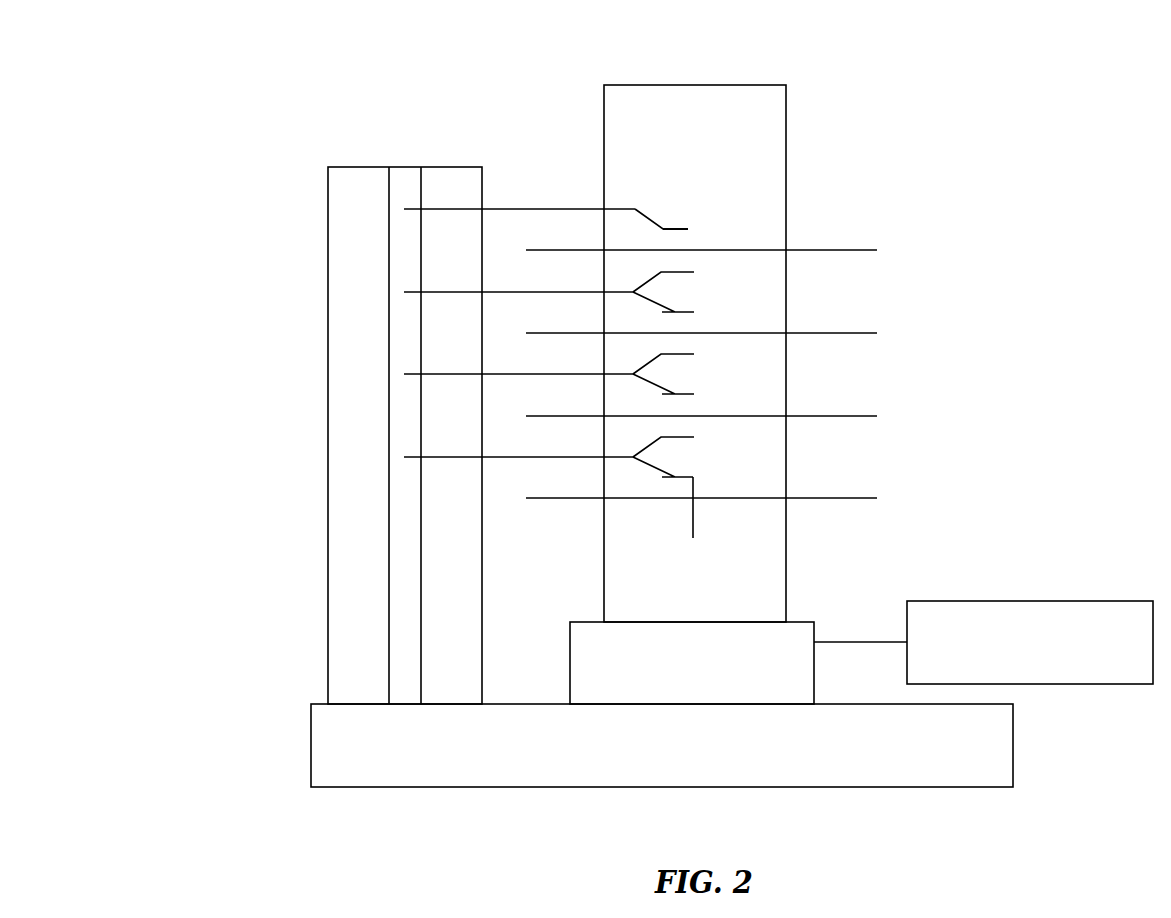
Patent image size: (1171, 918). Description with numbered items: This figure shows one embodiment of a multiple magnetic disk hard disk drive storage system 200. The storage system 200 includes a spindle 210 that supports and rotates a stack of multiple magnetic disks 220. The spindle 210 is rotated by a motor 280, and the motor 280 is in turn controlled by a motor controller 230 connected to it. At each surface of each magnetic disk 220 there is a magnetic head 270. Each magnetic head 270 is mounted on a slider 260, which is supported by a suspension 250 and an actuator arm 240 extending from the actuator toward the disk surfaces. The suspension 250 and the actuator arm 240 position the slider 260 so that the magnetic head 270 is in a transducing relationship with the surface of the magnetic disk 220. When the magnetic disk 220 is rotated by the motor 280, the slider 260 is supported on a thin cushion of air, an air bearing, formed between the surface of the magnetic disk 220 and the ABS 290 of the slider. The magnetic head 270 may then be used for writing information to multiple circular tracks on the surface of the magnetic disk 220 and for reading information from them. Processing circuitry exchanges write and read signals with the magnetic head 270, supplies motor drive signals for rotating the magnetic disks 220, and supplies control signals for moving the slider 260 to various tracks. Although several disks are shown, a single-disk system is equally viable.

The storage system 200 is at (148, 748).
The spindle 210 is at (787, 90).
The magnetic disks 220 is at (832, 250).
The motor controller 230 is at (1060, 601).
The actuator arm 240 is at (542, 208).
The suspension 250 is at (648, 209).
The slider 260 is at (677, 229).
The magnetic head 270 is at (712, 525).
The motor 280 is at (797, 622).
The ABS 290 is at (678, 240).